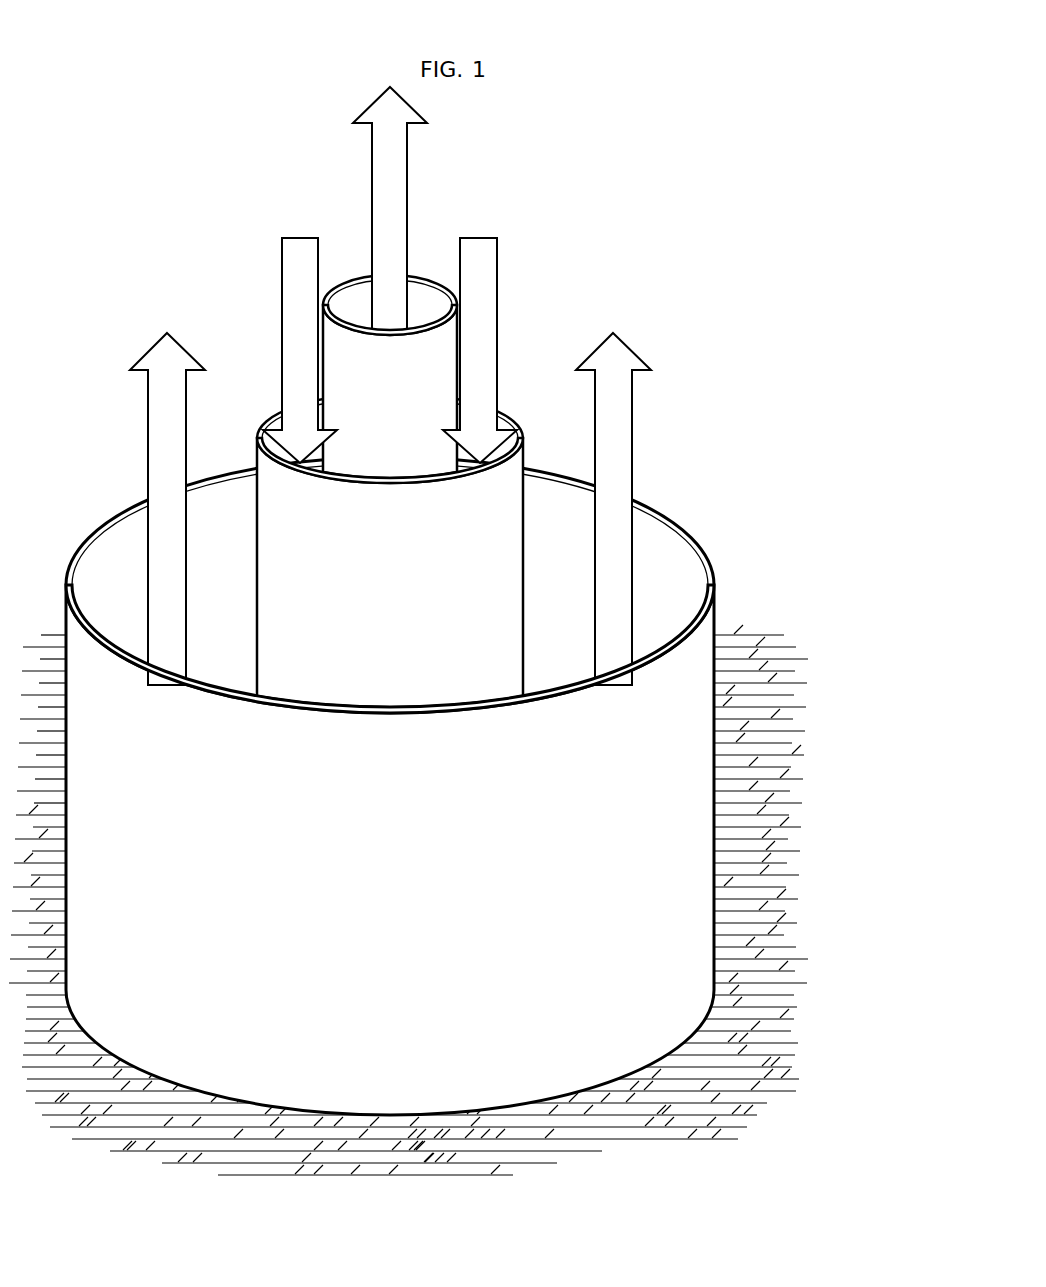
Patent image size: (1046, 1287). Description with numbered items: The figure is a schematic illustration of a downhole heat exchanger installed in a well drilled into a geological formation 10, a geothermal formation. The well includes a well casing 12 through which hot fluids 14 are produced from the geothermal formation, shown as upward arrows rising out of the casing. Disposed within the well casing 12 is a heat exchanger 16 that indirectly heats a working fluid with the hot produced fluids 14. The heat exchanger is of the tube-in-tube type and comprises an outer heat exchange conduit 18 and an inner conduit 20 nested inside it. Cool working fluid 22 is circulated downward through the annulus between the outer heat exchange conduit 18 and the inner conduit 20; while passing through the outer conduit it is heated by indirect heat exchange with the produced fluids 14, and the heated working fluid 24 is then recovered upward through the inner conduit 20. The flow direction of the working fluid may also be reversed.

The geological formation 10 is at (752, 731).
The well casing 12 is at (720, 598).
The produced fluids 14 is at (141, 341).
The heat exchanger 16 is at (552, 369).
The outer heat exchange conduit 18 is at (256, 392).
The inner conduit 20 is at (430, 258).
The cool working fluid 22 is at (272, 266).
The heated working fluid 24 is at (360, 96).